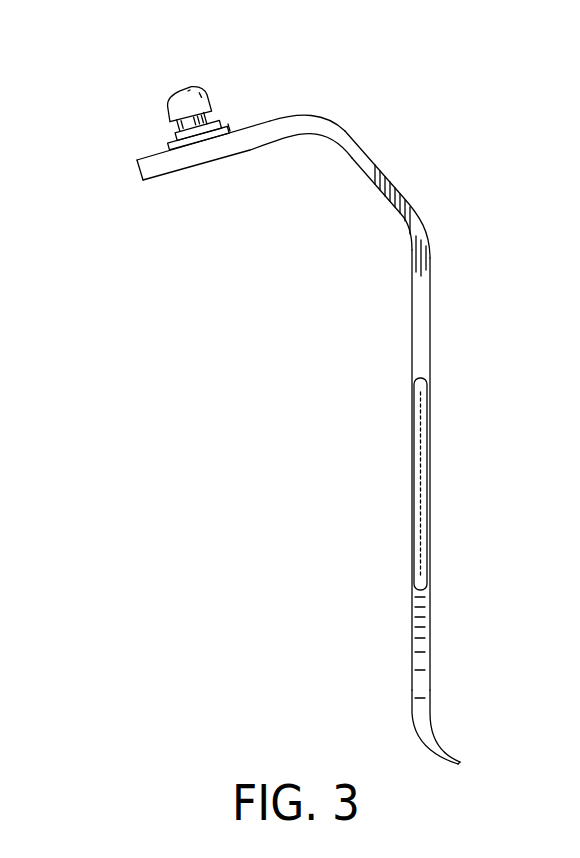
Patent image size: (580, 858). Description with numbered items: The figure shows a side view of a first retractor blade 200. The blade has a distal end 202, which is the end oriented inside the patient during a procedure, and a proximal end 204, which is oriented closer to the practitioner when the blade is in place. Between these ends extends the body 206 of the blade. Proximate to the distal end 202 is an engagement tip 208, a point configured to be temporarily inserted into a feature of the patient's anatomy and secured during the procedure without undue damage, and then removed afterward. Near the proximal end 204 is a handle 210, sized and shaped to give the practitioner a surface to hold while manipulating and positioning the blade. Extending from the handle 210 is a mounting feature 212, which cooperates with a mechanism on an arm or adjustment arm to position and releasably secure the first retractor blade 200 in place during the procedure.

The first retractor blade 200 is at (310, 543).
The distal end 202 is at (380, 718).
The proximal end 204 is at (400, 128).
The body 206 is at (410, 408).
The engagement tip 208 is at (462, 762).
The handle 210 is at (290, 113).
The mounting feature 212 is at (143, 129).